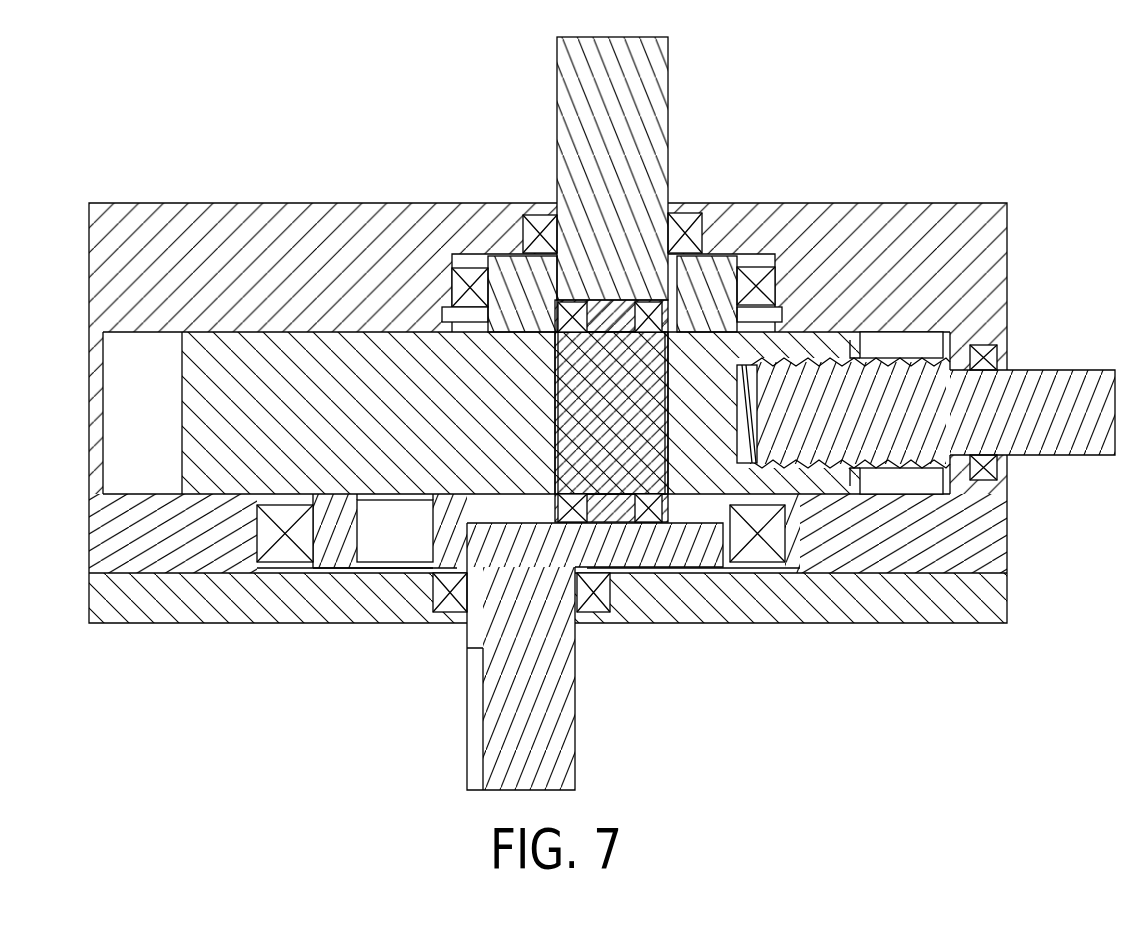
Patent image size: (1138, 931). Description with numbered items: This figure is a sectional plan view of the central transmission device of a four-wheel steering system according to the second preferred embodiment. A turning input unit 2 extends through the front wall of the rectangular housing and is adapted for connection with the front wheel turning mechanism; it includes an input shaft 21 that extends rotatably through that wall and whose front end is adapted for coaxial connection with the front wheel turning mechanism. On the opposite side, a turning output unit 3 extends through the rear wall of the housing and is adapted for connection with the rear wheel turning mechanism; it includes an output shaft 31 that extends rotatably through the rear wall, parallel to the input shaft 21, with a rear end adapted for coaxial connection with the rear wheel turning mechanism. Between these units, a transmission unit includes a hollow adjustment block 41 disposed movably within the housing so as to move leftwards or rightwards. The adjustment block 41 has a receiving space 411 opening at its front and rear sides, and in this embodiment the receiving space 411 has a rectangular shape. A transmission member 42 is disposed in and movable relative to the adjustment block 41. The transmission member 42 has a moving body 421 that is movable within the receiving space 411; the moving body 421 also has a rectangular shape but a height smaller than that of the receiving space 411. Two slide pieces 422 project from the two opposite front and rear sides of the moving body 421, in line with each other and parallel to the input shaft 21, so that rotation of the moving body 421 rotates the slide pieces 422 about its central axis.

The turning input unit 2 is at (625, 168).
The input shaft 21 is at (598, 87).
The turning output unit 3 is at (595, 656).
The output shaft 31 is at (565, 752).
The adjustment block 41 is at (562, 321).
The receiving space 411 is at (577, 381).
The transmission member 42 is at (652, 406).
The moving body 421 is at (672, 370).
The slide pieces 422 is at (590, 301).